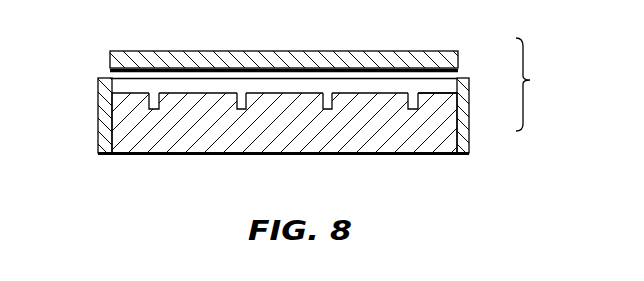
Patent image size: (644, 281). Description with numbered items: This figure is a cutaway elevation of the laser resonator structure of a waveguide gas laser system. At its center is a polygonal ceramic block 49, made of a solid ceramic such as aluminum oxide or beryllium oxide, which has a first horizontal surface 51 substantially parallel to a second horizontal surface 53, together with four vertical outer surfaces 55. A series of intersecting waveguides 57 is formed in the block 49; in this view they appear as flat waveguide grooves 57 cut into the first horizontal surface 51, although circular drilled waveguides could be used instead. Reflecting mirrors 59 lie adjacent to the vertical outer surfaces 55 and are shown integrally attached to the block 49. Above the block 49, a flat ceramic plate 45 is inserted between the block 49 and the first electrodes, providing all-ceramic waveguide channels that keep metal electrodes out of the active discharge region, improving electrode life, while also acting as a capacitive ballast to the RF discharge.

The flat ceramic plate 45 is at (443, 53).
The polygonal ceramic block 49 is at (218, 142).
The first horizontal surface 51 is at (443, 92).
The second horizontal surface 53 is at (289, 155).
The vertical outer surfaces 55 is at (110, 132).
The intersecting waveguides 57 is at (155, 93).
The reflecting mirrors 59 is at (285, 82).